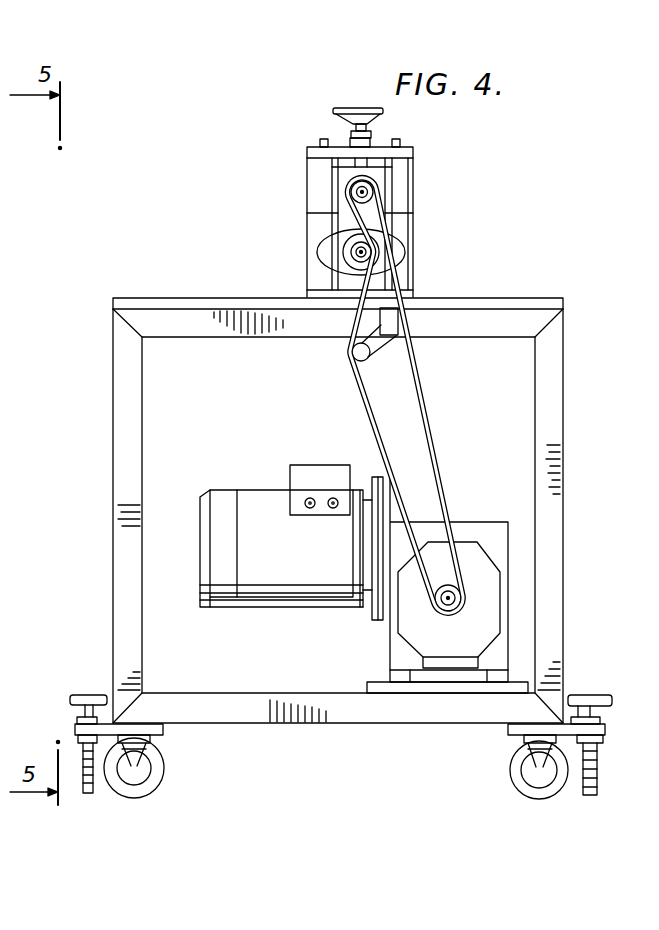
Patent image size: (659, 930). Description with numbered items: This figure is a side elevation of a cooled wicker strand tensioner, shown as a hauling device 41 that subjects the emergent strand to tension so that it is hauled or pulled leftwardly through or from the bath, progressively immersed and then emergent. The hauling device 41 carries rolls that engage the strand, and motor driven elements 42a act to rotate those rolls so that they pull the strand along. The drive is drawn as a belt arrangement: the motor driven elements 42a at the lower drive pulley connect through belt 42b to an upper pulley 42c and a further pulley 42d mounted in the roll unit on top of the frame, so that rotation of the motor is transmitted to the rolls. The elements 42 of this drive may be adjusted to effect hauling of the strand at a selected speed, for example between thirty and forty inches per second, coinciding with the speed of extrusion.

The hauling device 41 is at (454, 218).
The elements 42 is at (426, 370).
The motor driven elements 42a is at (450, 597).
The belt 42b is at (434, 439).
The driven pulley 42c is at (360, 192).
The tension pulley 42d is at (359, 253).